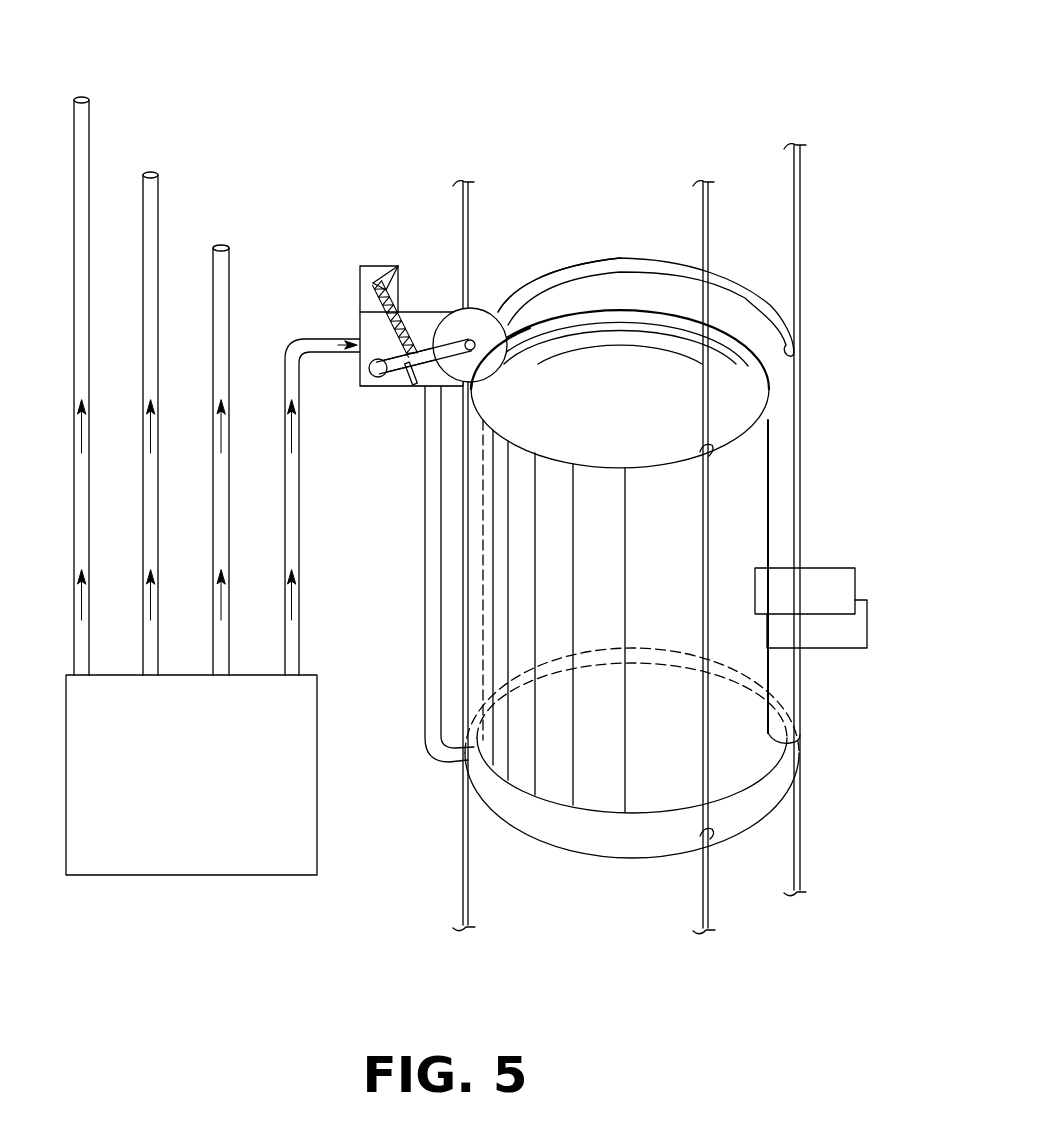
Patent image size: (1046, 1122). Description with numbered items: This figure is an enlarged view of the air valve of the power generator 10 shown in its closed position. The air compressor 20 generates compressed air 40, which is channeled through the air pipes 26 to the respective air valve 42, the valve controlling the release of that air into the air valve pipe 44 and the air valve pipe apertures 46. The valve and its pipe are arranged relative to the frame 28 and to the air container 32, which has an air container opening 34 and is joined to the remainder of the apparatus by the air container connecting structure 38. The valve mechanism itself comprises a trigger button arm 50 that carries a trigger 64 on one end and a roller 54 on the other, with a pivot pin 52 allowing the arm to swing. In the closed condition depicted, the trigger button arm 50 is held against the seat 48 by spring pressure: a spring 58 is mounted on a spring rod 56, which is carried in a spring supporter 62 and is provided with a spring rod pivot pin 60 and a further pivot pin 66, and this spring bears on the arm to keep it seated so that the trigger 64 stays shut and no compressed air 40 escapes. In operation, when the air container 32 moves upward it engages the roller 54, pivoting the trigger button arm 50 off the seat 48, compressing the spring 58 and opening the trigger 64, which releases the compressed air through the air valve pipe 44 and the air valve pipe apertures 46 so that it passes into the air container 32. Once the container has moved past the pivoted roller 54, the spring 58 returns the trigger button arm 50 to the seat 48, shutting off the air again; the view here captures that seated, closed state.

The power generator 10 is at (622, 100).
The air compressor 20 is at (226, 805).
The air pipe 26 is at (80, 197).
The frame 28 is at (797, 862).
The air container 32 is at (613, 307).
The air container opening 34 is at (745, 782).
The air container connecting structure 38 is at (837, 625).
The compressed air 40 is at (300, 594).
The air valve 42 is at (375, 385).
The air valve pipe 44 is at (430, 610).
The air valve pipe apertures 46 is at (798, 352).
The seat 48 is at (405, 385).
The trigger button arm 50 is at (502, 362).
The pivot pin 52 is at (500, 325).
The roller 54 is at (470, 308).
The spring rod 56 is at (393, 302).
The spring 58 is at (383, 323).
The spring rod pivot pin 60 is at (368, 266).
The spring supporter 62 is at (360, 267).
The trigger 64 is at (378, 377).
The pivot pin 66 is at (377, 357).